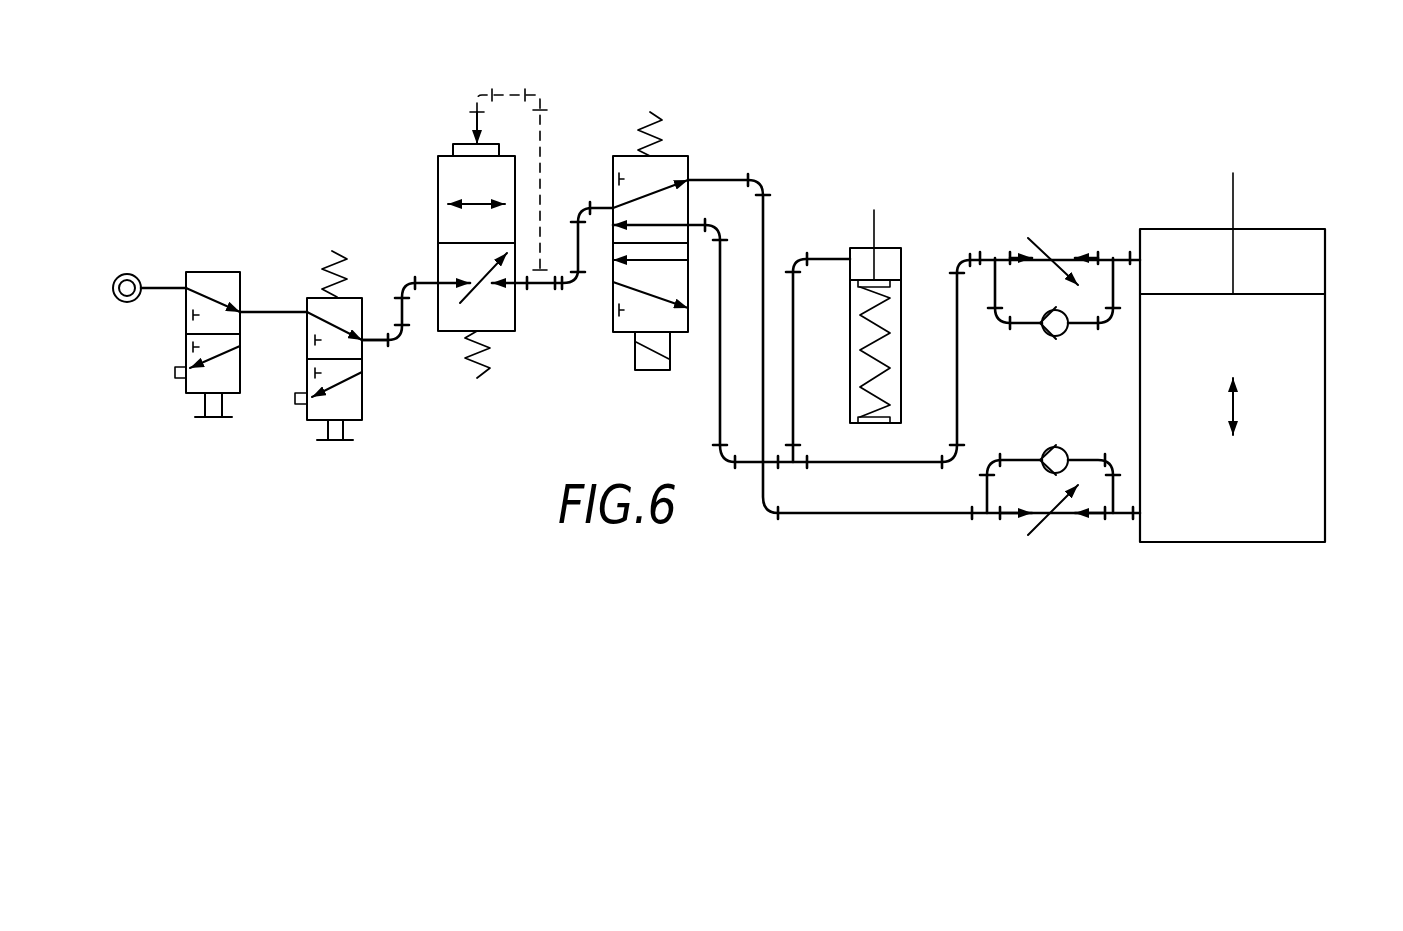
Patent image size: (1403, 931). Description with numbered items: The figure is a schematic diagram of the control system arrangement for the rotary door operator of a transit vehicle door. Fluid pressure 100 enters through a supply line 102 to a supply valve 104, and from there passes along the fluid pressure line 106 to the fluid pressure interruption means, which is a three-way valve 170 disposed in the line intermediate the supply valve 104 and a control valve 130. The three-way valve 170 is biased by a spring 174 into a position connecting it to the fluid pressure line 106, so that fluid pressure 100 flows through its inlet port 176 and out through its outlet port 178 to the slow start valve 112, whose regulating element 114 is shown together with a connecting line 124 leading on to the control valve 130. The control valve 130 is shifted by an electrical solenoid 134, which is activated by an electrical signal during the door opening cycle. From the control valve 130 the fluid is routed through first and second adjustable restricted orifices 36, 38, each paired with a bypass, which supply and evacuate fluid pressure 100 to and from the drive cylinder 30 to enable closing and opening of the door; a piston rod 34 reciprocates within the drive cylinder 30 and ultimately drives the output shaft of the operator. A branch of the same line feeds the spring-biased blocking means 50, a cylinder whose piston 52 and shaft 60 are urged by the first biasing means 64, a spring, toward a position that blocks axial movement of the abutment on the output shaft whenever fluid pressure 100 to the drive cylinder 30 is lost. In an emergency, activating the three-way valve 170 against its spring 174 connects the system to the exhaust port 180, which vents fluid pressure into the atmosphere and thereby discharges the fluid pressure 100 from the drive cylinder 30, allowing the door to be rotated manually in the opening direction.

The drive cylinder 30 is at (1265, 353).
The piston rod 34 is at (1235, 190).
The first adjustable restricted orifice 36 is at (1058, 518).
The second adjustable restricted orifice 38 is at (1062, 250).
The blocking means 50 is at (885, 300).
The accumulator piston 52 is at (882, 278).
The shaft 60 is at (872, 222).
The first biasing means 64 is at (880, 378).
The fluid pressure 100 is at (120, 302).
The supply line 102 is at (160, 282).
The supply valve 104 is at (217, 272).
The fluid pressure line 106 is at (271, 315).
The slow start valve 112 is at (468, 234).
The variable orifice / regulator spring 114 is at (483, 287).
The line from regulator to directional valve 124 is at (577, 253).
The control valve 130 is at (670, 269).
The solenoid 134 is at (655, 372).
The three-way valve 170 is at (324, 334).
The spring 174 is at (330, 262).
The inlet port 176 is at (307, 312).
The outlet port 178 is at (364, 340).
The exhaust port 180 is at (303, 403).